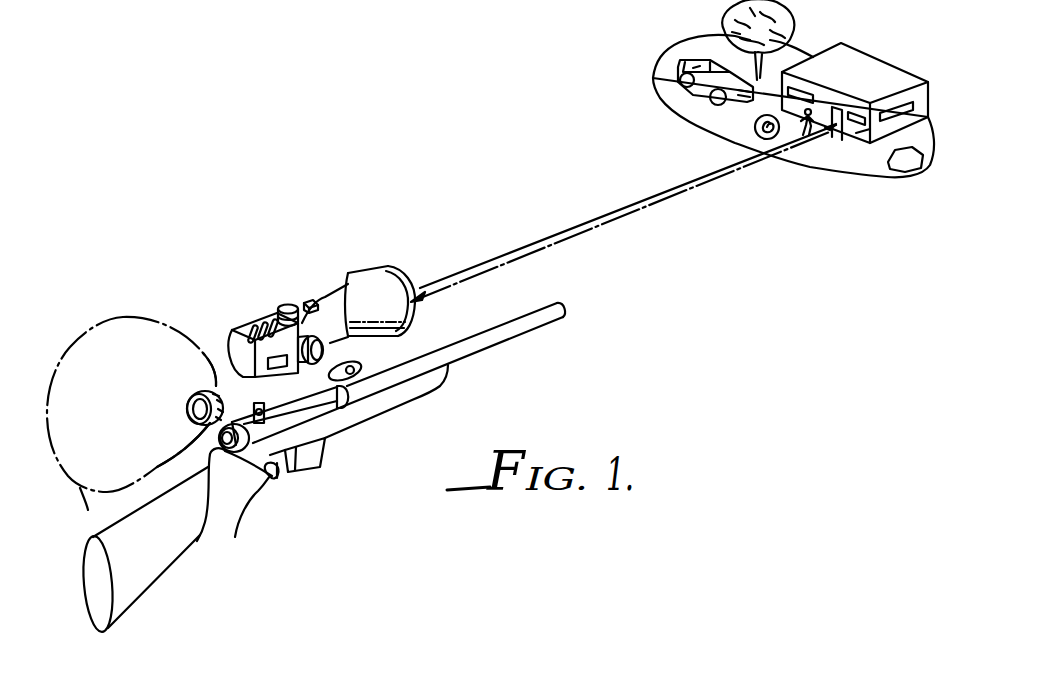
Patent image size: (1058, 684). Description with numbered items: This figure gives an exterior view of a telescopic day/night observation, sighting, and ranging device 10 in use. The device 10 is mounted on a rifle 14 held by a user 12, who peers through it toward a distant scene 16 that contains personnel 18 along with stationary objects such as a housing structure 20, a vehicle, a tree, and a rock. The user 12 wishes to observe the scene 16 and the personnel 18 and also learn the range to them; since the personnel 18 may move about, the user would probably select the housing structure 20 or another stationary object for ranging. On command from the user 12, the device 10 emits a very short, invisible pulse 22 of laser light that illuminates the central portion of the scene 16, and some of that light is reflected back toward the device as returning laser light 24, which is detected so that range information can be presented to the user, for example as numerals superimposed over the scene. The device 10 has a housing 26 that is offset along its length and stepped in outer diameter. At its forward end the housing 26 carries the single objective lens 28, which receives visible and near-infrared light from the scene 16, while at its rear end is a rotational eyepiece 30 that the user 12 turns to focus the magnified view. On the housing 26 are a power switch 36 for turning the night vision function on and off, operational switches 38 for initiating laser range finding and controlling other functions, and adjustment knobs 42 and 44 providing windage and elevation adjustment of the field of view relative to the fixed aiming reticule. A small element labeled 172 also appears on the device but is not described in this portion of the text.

The telescopic day/night observation and laser range finding device 10 is at (328, 256).
The user 12 is at (110, 317).
The rifle 14 is at (419, 393).
The distant scene 16 is at (808, 183).
The personnel 18 is at (822, 122).
The housing structure 20 is at (860, 137).
The pulse of laser light 22 is at (575, 225).
The returning laser light 24 is at (577, 240).
The housing 26 is at (330, 307).
The objective lens 28 is at (400, 275).
The eyepiece 30 is at (187, 406).
The power switch 36 is at (283, 366).
The operational switches 38 is at (242, 372).
The windage adjustment knob 42 is at (322, 353).
The elevation adjustment knob 44 is at (282, 307).
The switch 172 is at (311, 298).